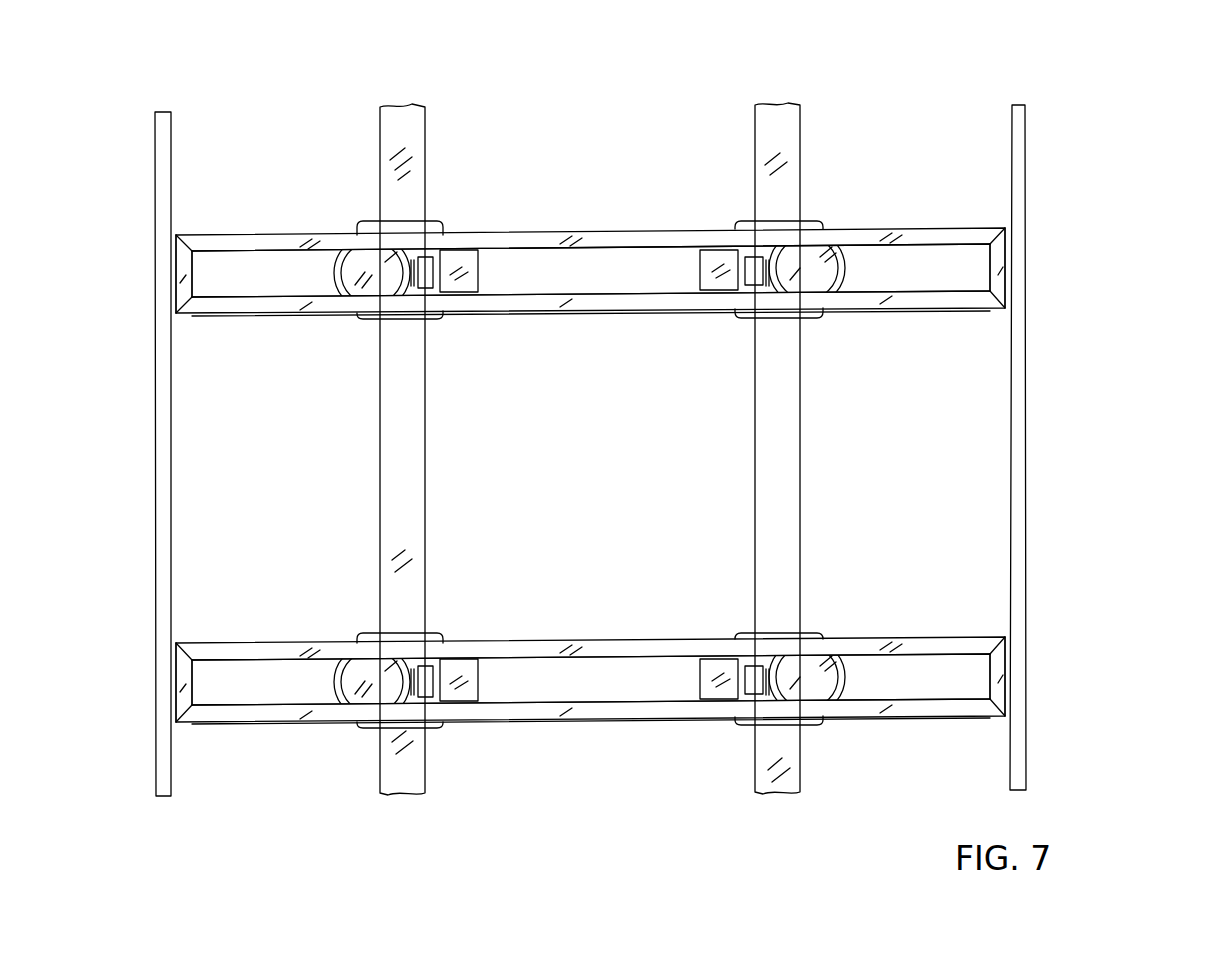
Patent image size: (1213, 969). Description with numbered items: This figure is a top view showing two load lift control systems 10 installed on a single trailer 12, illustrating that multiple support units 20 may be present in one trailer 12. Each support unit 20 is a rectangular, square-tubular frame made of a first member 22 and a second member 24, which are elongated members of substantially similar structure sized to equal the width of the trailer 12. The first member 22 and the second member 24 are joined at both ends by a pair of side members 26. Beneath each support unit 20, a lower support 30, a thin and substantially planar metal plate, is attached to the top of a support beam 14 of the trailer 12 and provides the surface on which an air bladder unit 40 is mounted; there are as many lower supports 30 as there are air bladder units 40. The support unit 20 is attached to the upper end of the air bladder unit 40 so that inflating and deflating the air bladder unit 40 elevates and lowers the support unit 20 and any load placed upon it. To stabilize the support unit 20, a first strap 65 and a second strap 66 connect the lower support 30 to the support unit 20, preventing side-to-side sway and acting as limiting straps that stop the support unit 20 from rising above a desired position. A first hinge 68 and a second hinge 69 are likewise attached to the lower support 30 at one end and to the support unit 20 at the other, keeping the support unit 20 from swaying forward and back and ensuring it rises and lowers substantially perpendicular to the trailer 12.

The load lift control system 10 is at (220, 136).
The trailer 12 is at (1017, 435).
The support beam 14 is at (793, 477).
The support unit 20 is at (615, 231).
The first member 22 is at (250, 302).
The second member 24 is at (292, 245).
The side members 26 is at (185, 288).
The lower support 30 is at (818, 225).
The air bladder unit 40 is at (365, 227).
The first strap 65 is at (443, 232).
The second strap 66 is at (732, 313).
The first hinge 68 is at (467, 313).
The second hinge 69 is at (698, 244).